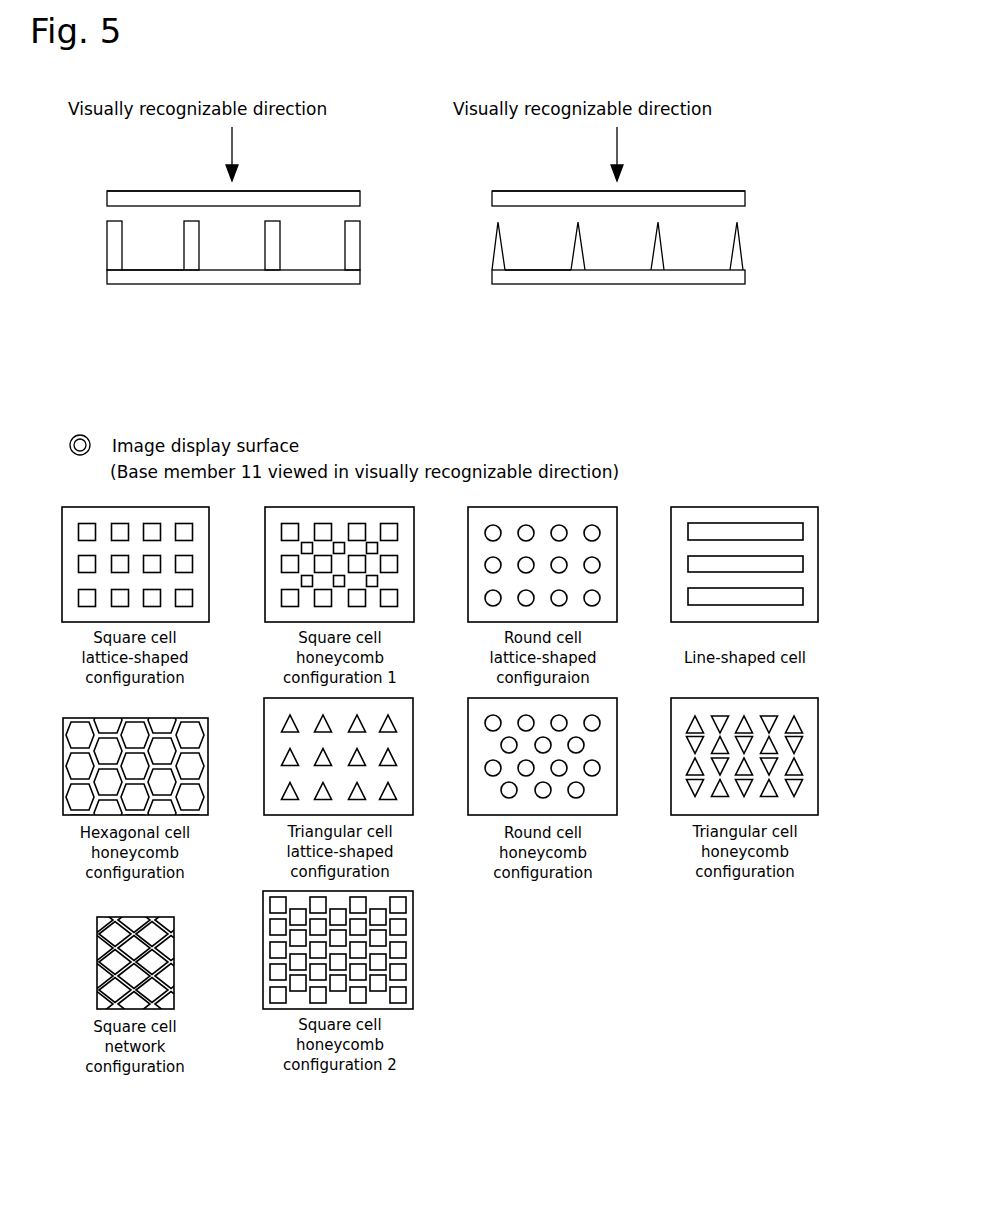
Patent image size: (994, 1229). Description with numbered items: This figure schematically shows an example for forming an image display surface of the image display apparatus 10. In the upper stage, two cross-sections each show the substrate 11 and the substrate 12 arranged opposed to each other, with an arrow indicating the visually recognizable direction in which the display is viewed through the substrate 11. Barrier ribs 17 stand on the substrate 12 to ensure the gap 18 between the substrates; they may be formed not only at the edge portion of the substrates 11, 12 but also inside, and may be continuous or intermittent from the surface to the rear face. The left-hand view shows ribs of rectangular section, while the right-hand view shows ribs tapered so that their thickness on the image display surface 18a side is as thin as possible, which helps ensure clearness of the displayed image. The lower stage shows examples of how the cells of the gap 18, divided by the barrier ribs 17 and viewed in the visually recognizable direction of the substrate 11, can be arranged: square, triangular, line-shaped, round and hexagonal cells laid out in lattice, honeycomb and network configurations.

The image display apparatus 10 is at (353, 163).
The substrate 11 is at (112, 197).
The substrate 12 is at (112, 278).
The barrier rib 17 is at (112, 246).
The gap 18 is at (152, 252).
The image display surface 18a is at (153, 190).